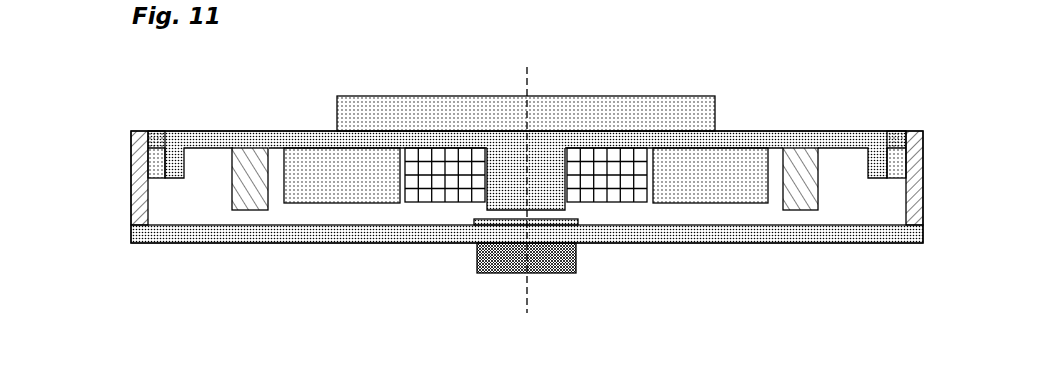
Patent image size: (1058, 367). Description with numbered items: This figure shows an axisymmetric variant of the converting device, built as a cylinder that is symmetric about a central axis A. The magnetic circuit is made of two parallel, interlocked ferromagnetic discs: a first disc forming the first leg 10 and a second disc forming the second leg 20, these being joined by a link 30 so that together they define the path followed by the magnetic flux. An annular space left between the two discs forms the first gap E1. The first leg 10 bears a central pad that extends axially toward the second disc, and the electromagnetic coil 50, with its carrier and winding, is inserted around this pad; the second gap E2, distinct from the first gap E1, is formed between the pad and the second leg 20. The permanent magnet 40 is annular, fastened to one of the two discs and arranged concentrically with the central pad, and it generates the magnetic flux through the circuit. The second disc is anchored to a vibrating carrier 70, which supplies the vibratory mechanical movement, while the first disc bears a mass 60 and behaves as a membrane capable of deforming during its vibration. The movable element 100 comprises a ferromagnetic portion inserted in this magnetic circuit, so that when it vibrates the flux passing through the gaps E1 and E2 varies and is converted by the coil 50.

The movable element 100 is at (838, 132).
The first leg 10 is at (748, 147).
The second leg 20 is at (762, 233).
The link 30 is at (140, 185).
The permanent magnet 40 is at (245, 160).
The electromagnetic coil 50 is at (440, 158).
The mass 60 is at (612, 110).
The vibrating carrier 70 is at (562, 262).
The first gap E1 is at (155, 143).
The second gap E2 is at (500, 215).
The axis A is at (541, 179).